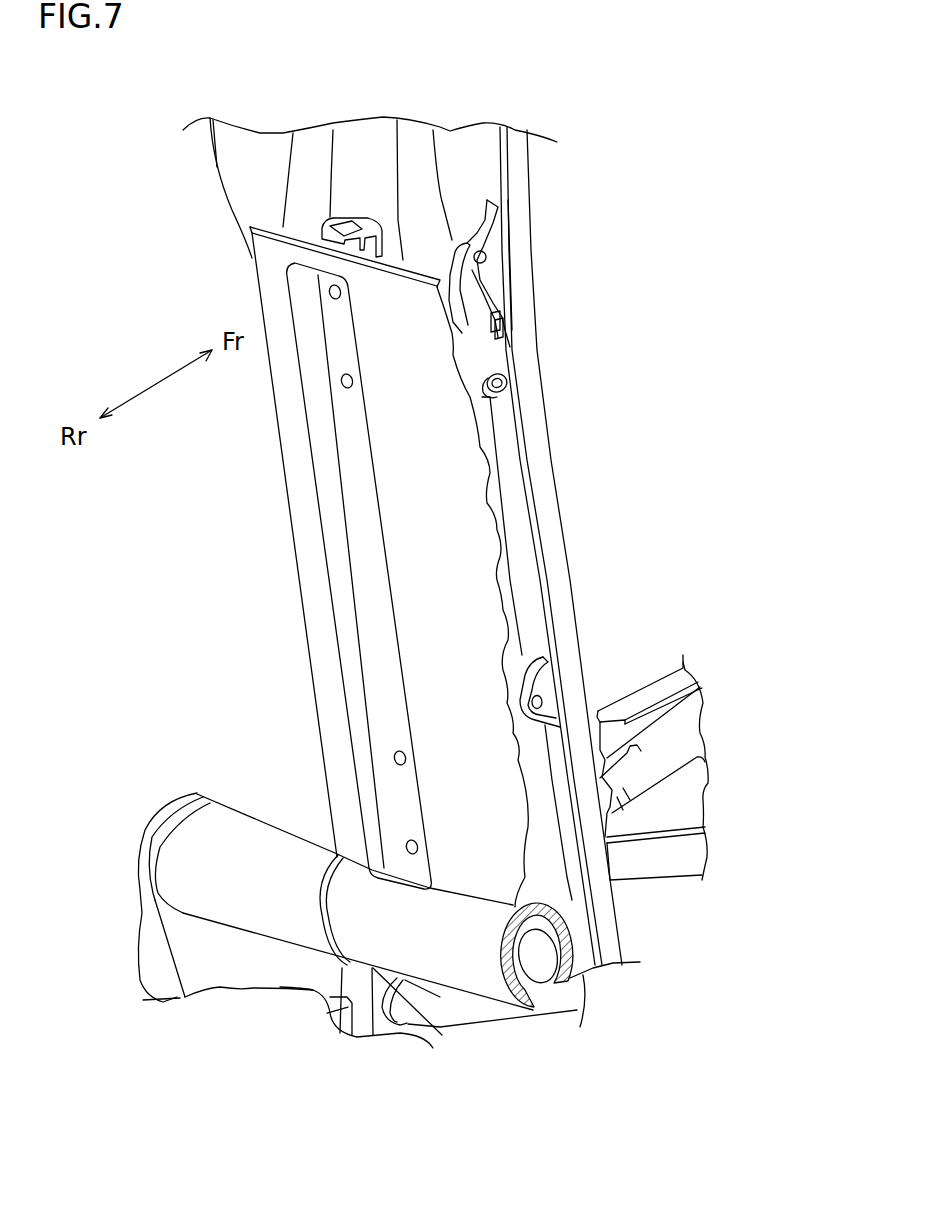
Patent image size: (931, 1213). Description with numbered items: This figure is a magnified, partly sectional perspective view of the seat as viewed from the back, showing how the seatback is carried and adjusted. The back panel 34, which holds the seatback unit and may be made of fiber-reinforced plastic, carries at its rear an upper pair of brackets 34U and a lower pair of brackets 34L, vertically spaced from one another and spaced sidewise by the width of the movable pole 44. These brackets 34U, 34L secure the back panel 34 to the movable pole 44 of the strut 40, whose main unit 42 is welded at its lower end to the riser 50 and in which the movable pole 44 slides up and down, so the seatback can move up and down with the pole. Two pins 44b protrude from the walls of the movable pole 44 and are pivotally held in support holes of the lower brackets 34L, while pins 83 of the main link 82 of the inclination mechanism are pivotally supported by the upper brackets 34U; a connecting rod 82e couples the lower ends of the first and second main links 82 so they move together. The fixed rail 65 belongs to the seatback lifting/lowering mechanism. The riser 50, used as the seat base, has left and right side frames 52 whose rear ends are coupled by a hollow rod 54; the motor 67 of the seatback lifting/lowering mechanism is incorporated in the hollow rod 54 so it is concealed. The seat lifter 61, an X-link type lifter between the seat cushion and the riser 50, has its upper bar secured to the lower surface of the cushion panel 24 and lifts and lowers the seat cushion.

The cushion panel 24 is at (536, 465).
The back panel 34 is at (483, 180).
The brackets 34U is at (493, 273).
The brackets 34L is at (541, 684).
The strut 40 is at (250, 603).
The main unit 42 is at (300, 470).
The movable pole 44 is at (510, 568).
The pins 44b is at (542, 702).
The riser 50 is at (116, 918).
The side frames 52 is at (220, 973).
The hollow rod 54 is at (265, 813).
The seat lifter 61 is at (687, 783).
The fixed rail 65 is at (358, 225).
The motor 67 is at (538, 967).
The main link 82 is at (483, 358).
The connecting rod 82e is at (503, 368).
The pins 83 is at (487, 258).